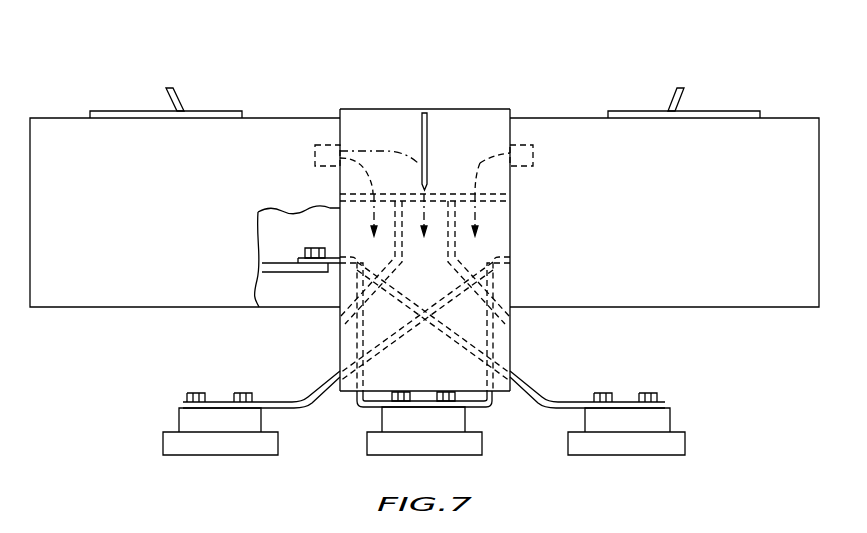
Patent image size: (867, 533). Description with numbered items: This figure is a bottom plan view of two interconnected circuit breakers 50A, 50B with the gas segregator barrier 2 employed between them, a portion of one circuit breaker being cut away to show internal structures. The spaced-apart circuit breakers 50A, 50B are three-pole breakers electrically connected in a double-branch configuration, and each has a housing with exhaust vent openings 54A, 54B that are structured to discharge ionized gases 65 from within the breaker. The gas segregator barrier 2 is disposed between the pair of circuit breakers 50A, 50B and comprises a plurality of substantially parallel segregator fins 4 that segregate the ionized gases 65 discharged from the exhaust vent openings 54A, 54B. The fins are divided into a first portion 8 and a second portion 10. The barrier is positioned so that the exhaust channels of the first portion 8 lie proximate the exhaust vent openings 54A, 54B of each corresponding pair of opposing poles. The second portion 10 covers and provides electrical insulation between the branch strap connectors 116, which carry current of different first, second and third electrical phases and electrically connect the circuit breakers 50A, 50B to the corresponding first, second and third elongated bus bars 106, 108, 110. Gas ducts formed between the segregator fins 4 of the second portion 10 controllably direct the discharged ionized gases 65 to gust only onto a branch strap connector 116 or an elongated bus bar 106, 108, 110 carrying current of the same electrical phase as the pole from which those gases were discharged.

The gas segregator barrier 2 is at (423, 233).
The segregator fins 4 is at (455, 108).
The first portion 8 is at (492, 120).
The second portion 10 is at (503, 341).
The ionized gases 65 is at (391, 150).
The exhaust vent openings 54A is at (315, 153).
The exhaust vent openings 54B is at (535, 153).
The circuit breaker 50A is at (79, 154).
The circuit breaker 50B is at (803, 158).
The branch strap connectors 116 is at (438, 294).
The first elongated bus bar 106 is at (168, 442).
The second elongated bus bar 108 is at (372, 446).
The third elongated bus bar 110 is at (578, 446).